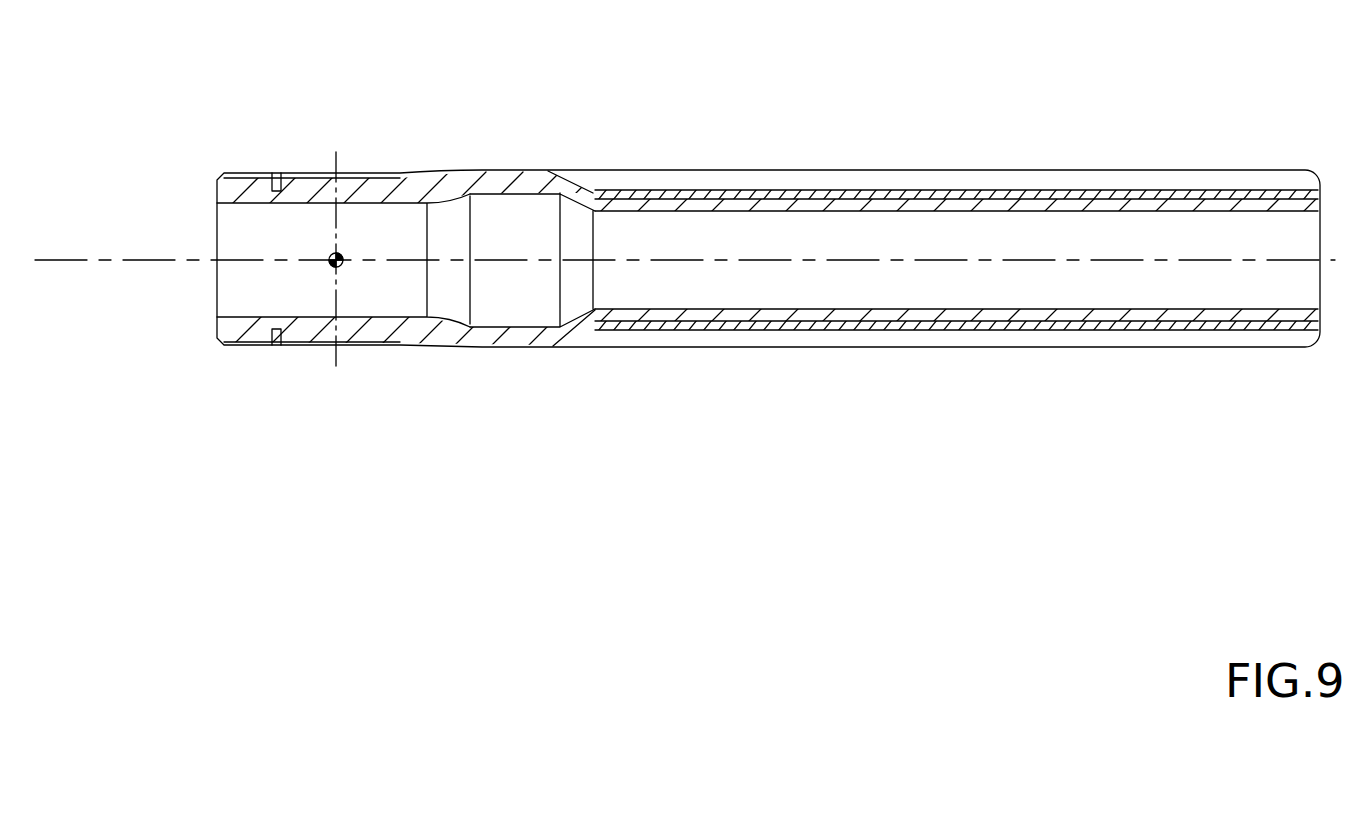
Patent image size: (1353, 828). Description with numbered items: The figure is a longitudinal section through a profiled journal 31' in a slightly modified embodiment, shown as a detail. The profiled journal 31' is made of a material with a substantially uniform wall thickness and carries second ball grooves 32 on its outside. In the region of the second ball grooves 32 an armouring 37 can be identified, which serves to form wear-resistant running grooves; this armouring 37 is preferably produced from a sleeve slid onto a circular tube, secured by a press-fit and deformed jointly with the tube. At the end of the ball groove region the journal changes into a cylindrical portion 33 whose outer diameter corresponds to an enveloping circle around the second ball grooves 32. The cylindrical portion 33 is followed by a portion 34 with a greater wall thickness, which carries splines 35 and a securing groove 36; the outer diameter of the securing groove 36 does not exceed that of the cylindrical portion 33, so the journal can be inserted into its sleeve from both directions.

The profiled journal 31' is at (581, 199).
The second ball grooves 32 is at (723, 177).
The cylindrical portion 33 is at (513, 178).
The portion with a greater wall thickness 34 is at (428, 182).
The splines 35 is at (318, 173).
The securing groove 36 is at (278, 190).
The armouring 37 is at (828, 193).